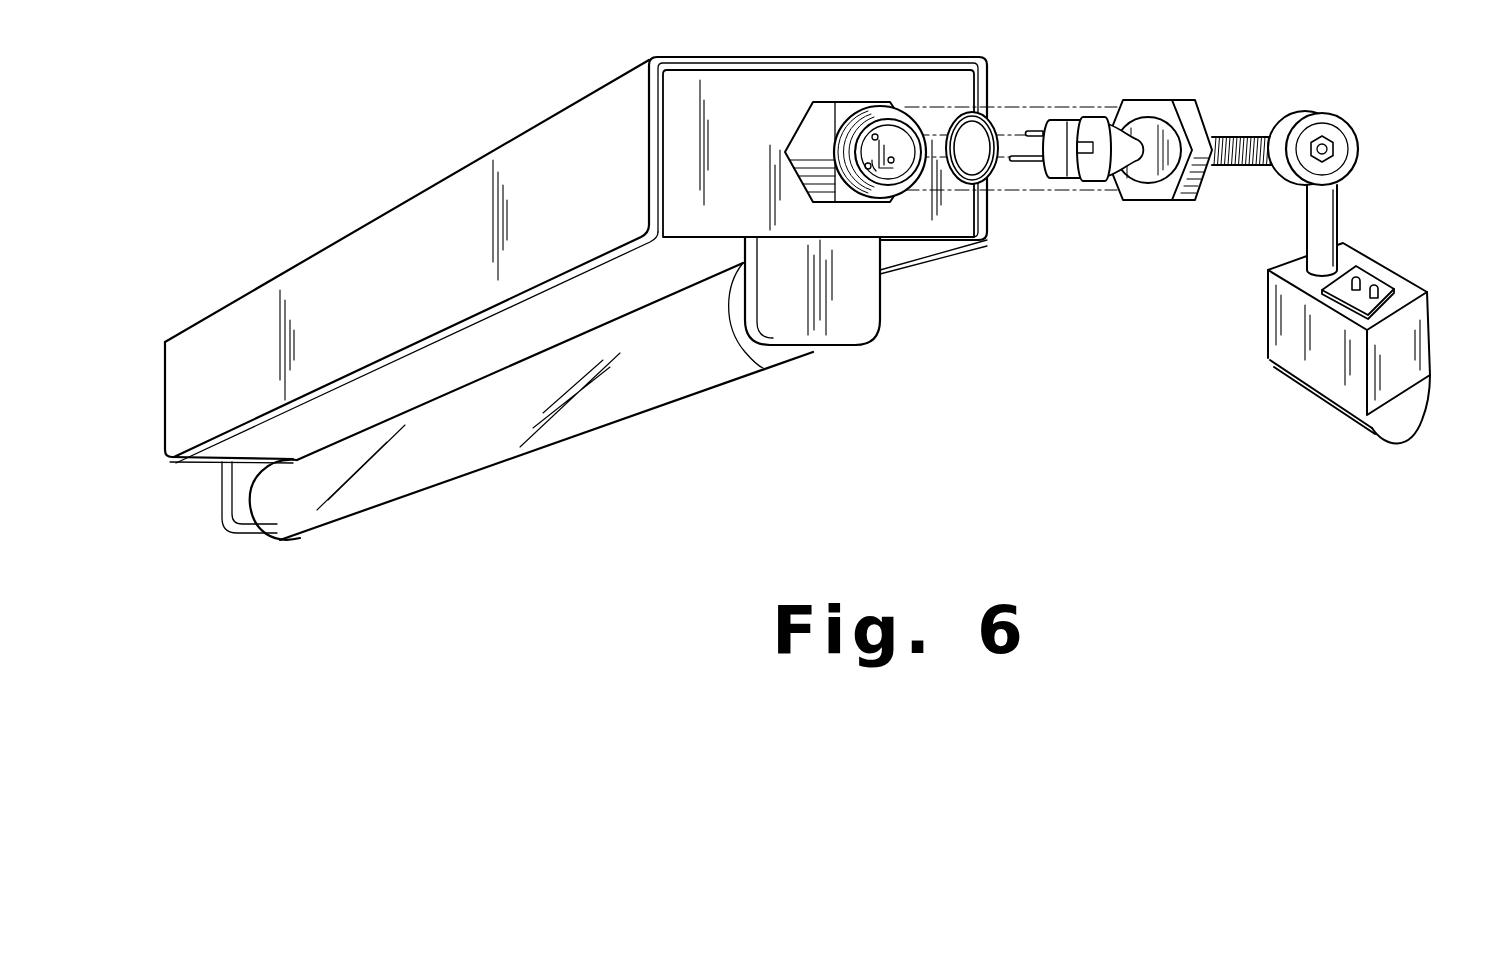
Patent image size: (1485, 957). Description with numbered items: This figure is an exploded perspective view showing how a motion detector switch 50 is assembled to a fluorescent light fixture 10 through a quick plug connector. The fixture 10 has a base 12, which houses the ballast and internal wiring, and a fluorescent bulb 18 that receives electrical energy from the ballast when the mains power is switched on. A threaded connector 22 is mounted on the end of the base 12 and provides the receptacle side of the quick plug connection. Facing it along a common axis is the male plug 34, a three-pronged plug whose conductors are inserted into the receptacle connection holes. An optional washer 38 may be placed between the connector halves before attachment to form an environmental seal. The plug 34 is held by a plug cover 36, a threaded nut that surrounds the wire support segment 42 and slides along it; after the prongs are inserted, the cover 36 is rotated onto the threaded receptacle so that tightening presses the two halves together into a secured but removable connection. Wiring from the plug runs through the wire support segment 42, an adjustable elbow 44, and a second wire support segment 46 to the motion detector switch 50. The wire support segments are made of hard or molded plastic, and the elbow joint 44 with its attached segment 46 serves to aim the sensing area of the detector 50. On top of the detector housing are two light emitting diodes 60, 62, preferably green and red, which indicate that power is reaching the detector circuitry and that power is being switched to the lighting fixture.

The fluorescent light fixture 10 is at (458, 167).
The base 12 is at (232, 335).
The fluorescent bulb 18 is at (458, 457).
The threaded connector 22 is at (823, 100).
The male plug 34 is at (1068, 180).
The plug cover 36 is at (1153, 198).
The washer 38 is at (990, 178).
The wire support segment 42 is at (1247, 135).
The elbow 44 is at (1360, 135).
The wire support segment 46 is at (1337, 228).
The motion detector switch 50 is at (1400, 363).
The light emitting diode 60 is at (1355, 277).
The light emitting diode 62 is at (1380, 287).